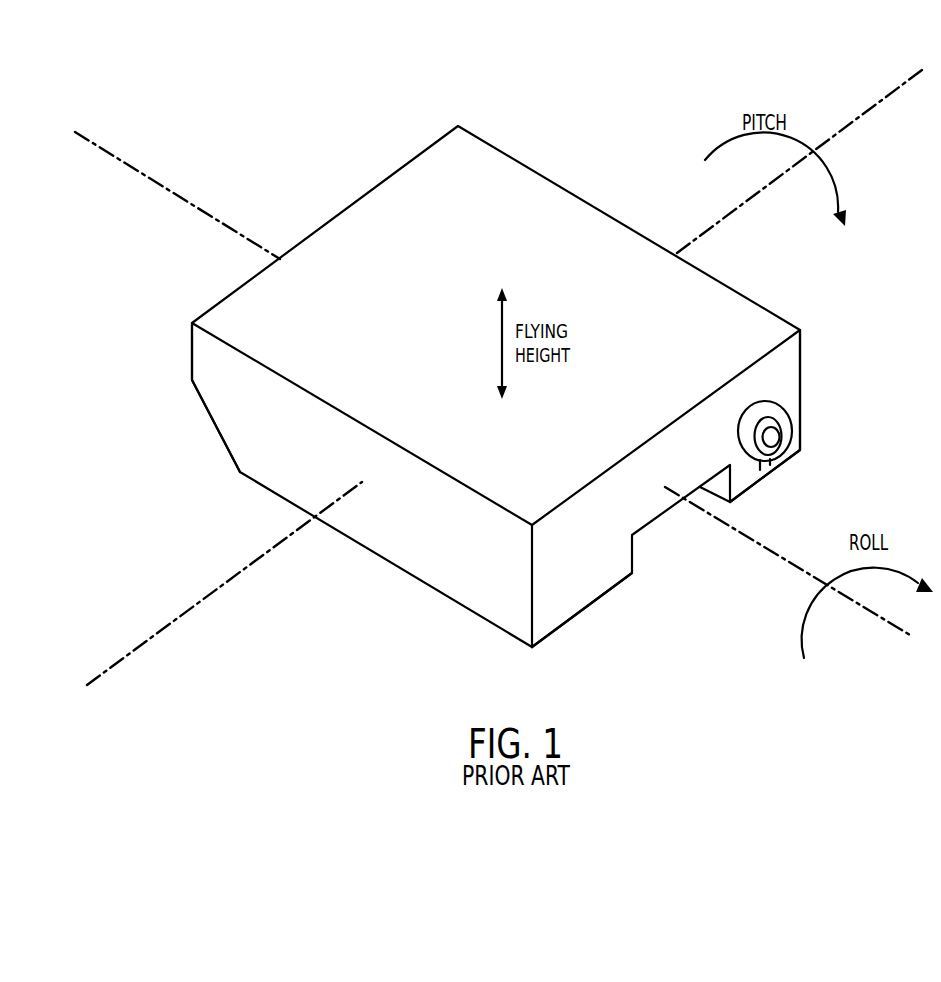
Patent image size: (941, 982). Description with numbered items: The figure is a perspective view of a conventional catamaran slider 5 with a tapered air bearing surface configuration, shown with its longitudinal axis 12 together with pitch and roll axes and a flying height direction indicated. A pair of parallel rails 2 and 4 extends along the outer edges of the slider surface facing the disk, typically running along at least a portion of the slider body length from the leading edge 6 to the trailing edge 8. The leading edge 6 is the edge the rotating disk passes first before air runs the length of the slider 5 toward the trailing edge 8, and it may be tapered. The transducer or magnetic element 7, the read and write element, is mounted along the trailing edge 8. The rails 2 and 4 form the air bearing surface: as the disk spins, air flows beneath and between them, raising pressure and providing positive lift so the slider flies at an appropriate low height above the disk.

The catamaran slider 5 is at (547, 116).
The longitudinal axis 12 is at (120, 157).
The leading edge 6 is at (192, 348).
The trailing edge 8 is at (801, 371).
The transducer or magnetic element 7 is at (793, 425).
The rail 2 is at (760, 485).
The rail 4 is at (604, 594).